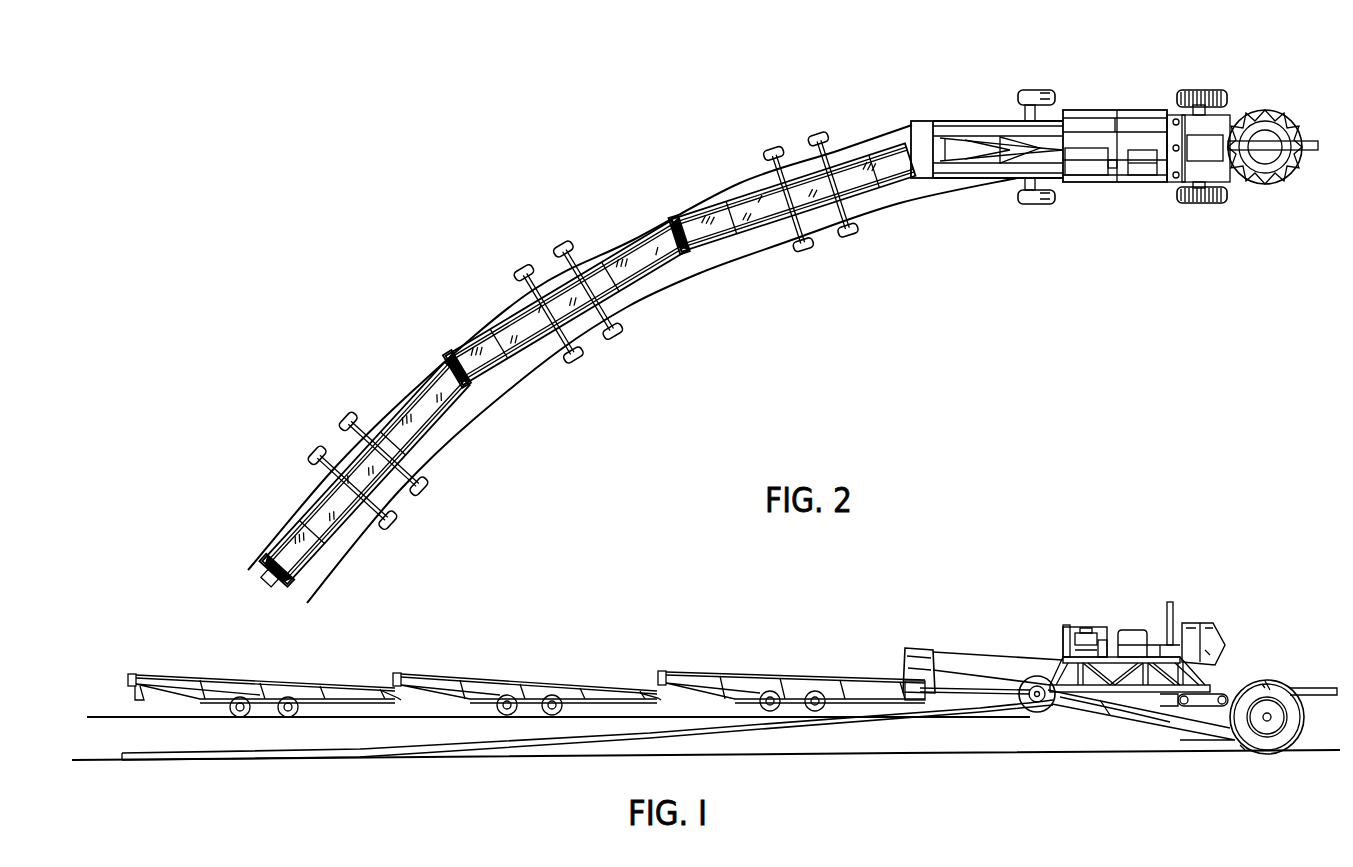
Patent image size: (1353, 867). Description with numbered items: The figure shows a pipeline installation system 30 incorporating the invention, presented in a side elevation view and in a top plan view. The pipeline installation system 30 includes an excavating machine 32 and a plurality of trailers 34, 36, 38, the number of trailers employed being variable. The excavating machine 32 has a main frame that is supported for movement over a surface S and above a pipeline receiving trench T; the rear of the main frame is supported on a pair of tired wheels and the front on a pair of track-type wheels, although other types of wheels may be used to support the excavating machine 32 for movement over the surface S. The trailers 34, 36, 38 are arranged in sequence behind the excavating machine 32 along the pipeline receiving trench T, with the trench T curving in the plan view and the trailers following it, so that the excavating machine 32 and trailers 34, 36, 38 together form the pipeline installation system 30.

In FIG. 2, the pipeline installation system 30 is at (860, 102).
In FIG. 1, the pipeline installation system 30 is at (988, 655).
In FIG. 2, the excavating machine 32 is at (1110, 102).
In FIG. 1, the excavating machine 32 is at (1132, 618).
In FIG. 2, the trailer 34 is at (737, 188).
In FIG. 1, the trailer 34 is at (770, 670).
In FIG. 2, the trailer 36 is at (497, 314).
In FIG. 1, the trailer 36 is at (490, 672).
In FIG. 2, the trailer 38 is at (384, 411).
In FIG. 1, the trailer 38 is at (232, 672).
In FIG. 2, the pipeline receiving trench T is at (471, 407).
In FIG. 1, the pipeline receiving trench T is at (120, 741).
In FIG. 1, the surface S is at (101, 716).